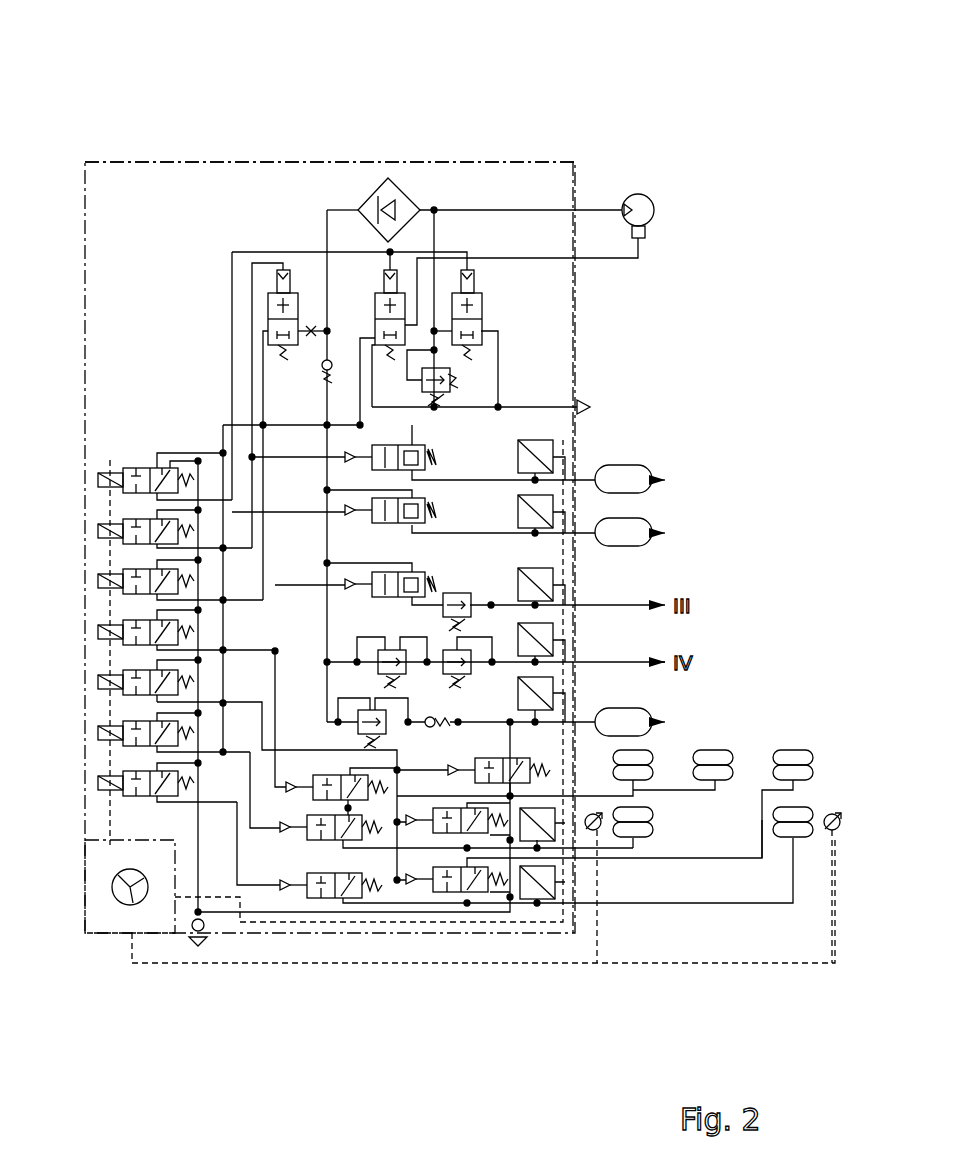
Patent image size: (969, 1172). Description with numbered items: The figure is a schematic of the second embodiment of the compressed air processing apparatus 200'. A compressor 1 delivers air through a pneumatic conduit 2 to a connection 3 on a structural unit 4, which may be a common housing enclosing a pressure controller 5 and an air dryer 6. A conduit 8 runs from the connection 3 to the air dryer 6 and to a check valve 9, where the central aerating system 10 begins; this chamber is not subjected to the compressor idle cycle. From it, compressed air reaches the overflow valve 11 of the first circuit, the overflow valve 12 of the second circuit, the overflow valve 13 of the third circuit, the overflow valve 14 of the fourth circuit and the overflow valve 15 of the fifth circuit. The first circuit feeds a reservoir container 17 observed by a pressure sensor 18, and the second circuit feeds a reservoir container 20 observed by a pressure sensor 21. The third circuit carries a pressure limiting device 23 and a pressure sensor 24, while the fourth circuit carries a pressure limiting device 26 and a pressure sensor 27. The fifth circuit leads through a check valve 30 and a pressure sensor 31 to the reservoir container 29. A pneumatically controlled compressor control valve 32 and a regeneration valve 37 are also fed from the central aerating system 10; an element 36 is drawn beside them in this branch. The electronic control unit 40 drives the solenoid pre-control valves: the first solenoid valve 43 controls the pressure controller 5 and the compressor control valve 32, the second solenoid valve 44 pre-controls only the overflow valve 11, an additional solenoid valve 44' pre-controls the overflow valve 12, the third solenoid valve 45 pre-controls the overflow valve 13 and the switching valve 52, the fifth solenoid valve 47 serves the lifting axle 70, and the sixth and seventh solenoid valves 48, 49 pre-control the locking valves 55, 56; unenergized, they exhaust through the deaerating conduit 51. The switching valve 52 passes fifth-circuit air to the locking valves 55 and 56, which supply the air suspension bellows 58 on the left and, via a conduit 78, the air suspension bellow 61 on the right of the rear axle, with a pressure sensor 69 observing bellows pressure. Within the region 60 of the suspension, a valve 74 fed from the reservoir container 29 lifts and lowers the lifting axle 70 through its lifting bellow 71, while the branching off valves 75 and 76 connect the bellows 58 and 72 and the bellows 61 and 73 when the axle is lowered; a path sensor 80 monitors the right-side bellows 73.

The compressed air processing apparatus 200' is at (84, 77).
The compressor 1 is at (644, 210).
The pneumatic conduit 2 is at (585, 210).
The connection 3 is at (568, 210).
The structural unit 4 is at (519, 162).
The pressure controller 5 is at (504, 318).
The air dryer 6 is at (408, 190).
The conduit 8 is at (472, 210).
The check valve 9 is at (322, 365).
The central aerating system 10 is at (324, 424).
The overflow valve 11 is at (447, 445).
The overflow valve 12 is at (450, 511).
The overflow valve 13 is at (436, 563).
The overflow valve 14 is at (413, 673).
The overflow valve 15 is at (371, 693).
The reservoir container 17 is at (636, 478).
The pressure sensor 18 is at (553, 450).
The reservoir container 20 is at (636, 531).
The pressure sensor 21 is at (556, 500).
The pressure limiting device 23 is at (553, 572).
The pressure sensor 24 is at (448, 590).
The pressure limiting device 26 is at (497, 670).
The pressure sensor 27 is at (553, 632).
The reservoir container 29 is at (627, 717).
The check valve 30 is at (503, 737).
The pressure sensor 31 is at (556, 688).
The compressor control valve 32 is at (367, 288).
The pressure regulator 36 is at (478, 386).
The regeneration valve 37 is at (258, 322).
The electronic control unit 40 is at (104, 850).
The first solenoid valve 43 is at (90, 480).
The second solenoid valve 44 is at (135, 529).
The additional solenoid valve 44' is at (138, 580).
The third solenoid valve 45 is at (90, 632).
The fifth solenoid valve 47 is at (90, 682).
The sixth solenoid valve 48 is at (90, 733).
The seventh solenoid valve 49 is at (90, 783).
The deaerating conduit 51 is at (196, 878).
The switching valve 52 is at (320, 773).
The locking valve 55 is at (283, 842).
The locking valve 56 is at (327, 905).
The air suspension bellows 58 is at (648, 820).
The vehicle unit 60 is at (725, 905).
The air suspension bellow 61 is at (795, 815).
The pressure sensor 69 is at (545, 880).
The lifting axle 70 is at (752, 770).
The lifting bellow 71 is at (714, 765).
The air suspension bellows 72 is at (643, 762).
The air suspension bellows 73 is at (792, 758).
The valve 74 is at (517, 745).
The branching off valve 75 is at (433, 842).
The branching off valve 76 is at (448, 905).
The conduit 78 is at (722, 858).
The path sensor 80 is at (842, 826).